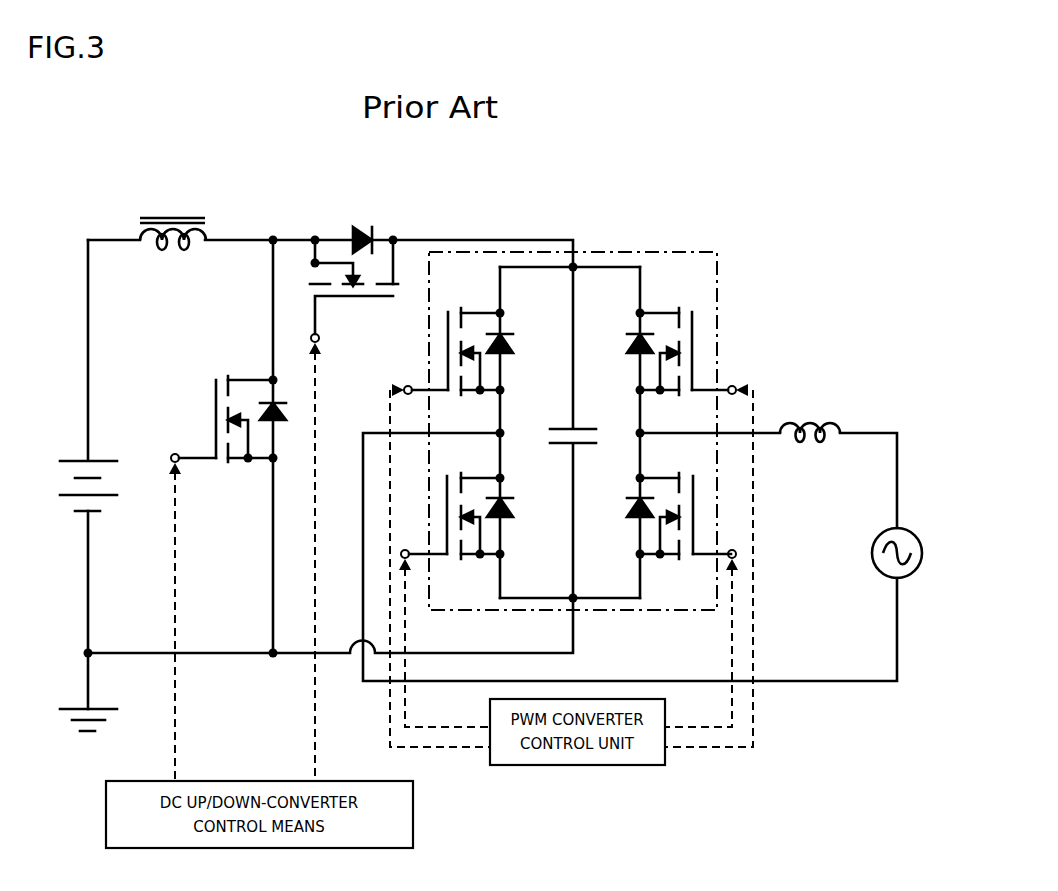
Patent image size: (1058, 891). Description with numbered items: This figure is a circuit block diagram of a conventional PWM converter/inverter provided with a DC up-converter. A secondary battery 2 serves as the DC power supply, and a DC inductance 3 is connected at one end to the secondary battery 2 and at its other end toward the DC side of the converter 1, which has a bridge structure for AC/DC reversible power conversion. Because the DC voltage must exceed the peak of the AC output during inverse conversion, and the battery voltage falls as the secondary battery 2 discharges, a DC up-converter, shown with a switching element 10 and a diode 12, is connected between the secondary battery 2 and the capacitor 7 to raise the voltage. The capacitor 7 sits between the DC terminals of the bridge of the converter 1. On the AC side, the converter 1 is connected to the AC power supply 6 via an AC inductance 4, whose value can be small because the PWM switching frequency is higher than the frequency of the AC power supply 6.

The converter 1 is at (604, 252).
The secondary battery 2 is at (62, 506).
The DC inductance 3 is at (175, 213).
The AC inductance 4 is at (822, 418).
The AC power supply 6 is at (868, 556).
The capacitor 7 is at (566, 447).
The switching element 10 is at (246, 373).
The diode / switching element 12 is at (378, 222).